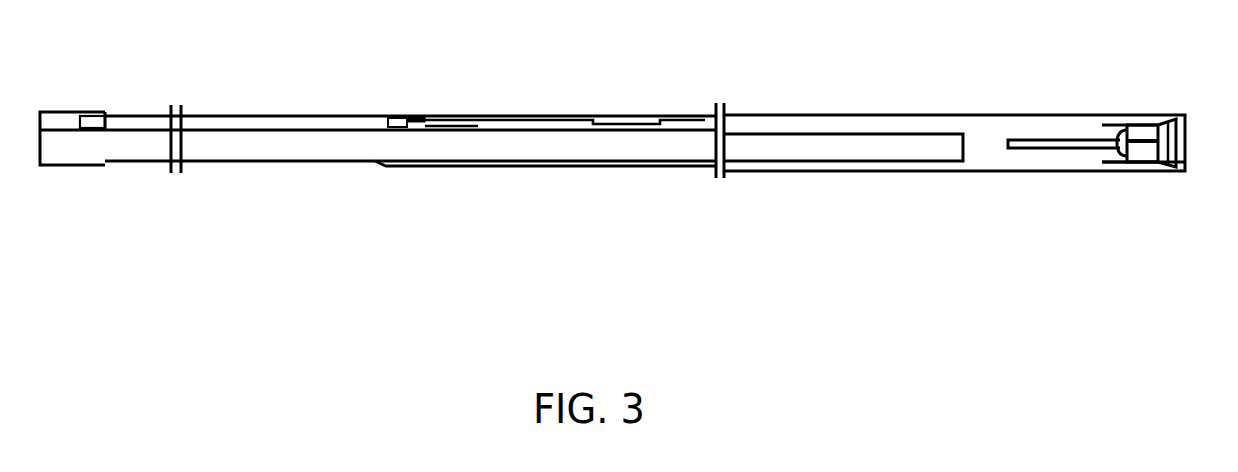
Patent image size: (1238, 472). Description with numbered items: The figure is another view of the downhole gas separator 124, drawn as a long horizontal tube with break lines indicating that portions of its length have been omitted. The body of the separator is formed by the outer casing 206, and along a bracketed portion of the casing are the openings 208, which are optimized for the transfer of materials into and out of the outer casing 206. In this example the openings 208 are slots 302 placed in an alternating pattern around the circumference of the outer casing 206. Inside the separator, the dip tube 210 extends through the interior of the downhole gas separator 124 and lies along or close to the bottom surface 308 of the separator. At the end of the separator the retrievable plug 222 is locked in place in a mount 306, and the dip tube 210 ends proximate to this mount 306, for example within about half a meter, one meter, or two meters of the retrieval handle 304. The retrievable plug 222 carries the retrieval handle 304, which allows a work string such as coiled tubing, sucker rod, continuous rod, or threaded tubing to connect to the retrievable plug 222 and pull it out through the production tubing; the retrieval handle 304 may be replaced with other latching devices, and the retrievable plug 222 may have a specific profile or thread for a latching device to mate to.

The downhole gas separator 124 is at (605, 374).
The outer casing 206 is at (283, 161).
The openings 208 is at (717, 75).
The dip tube 210 is at (733, 171).
The retrievable plug 222 is at (1130, 163).
The slots 302 is at (565, 112).
The retrieval handle 304 is at (1023, 148).
The mount 306 is at (1153, 115).
The bottom surface 308 is at (758, 102).